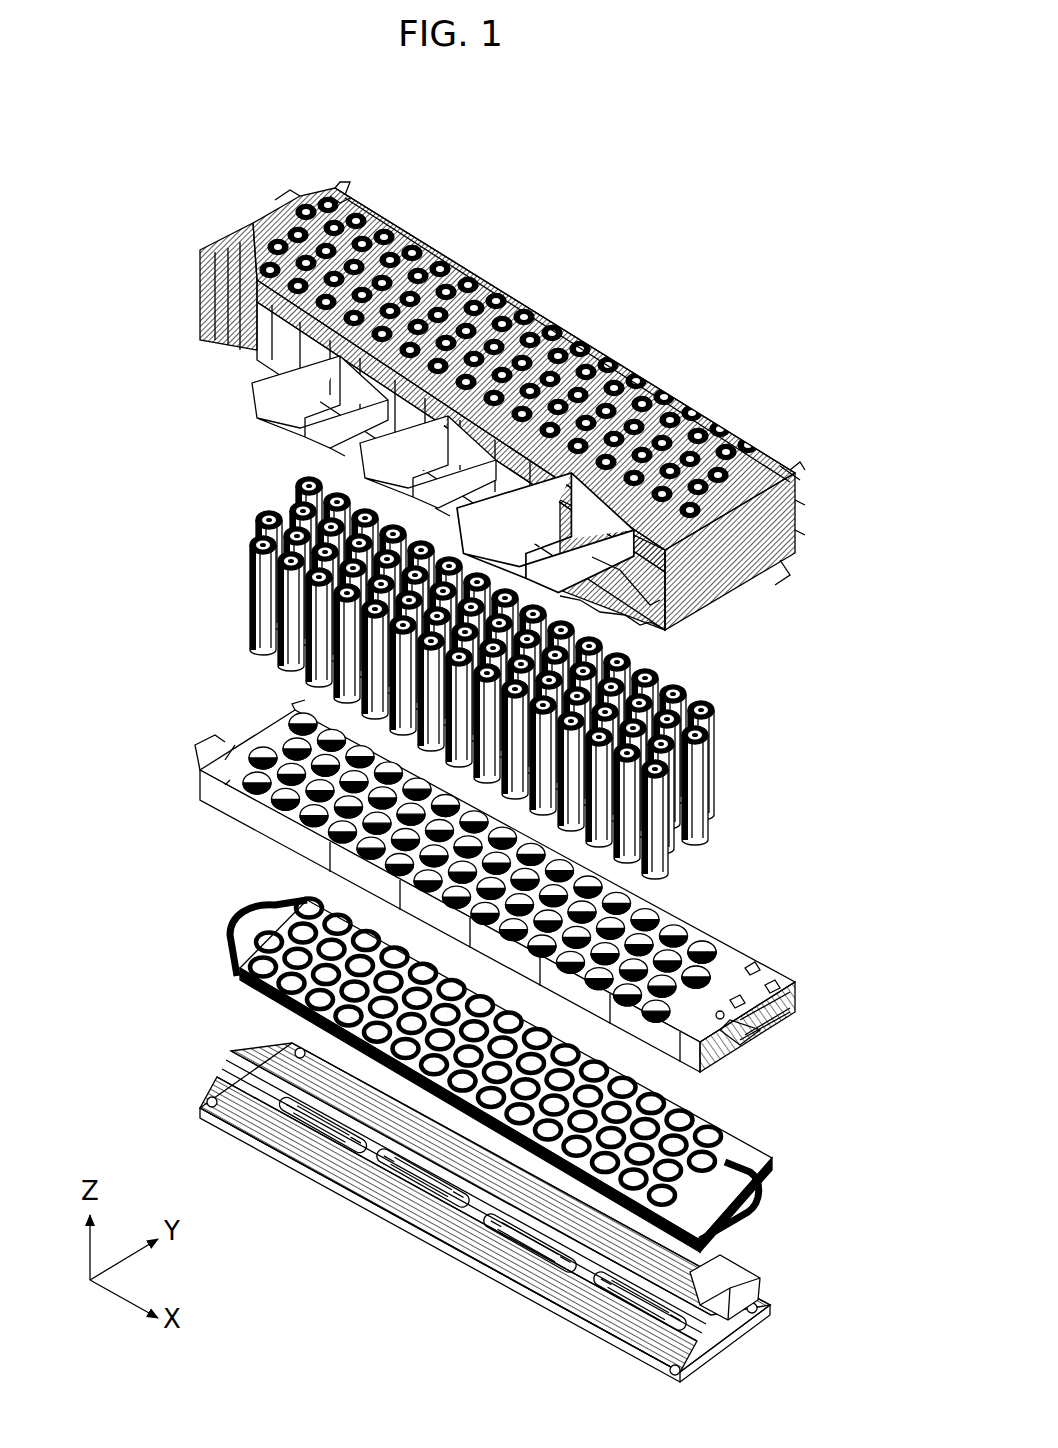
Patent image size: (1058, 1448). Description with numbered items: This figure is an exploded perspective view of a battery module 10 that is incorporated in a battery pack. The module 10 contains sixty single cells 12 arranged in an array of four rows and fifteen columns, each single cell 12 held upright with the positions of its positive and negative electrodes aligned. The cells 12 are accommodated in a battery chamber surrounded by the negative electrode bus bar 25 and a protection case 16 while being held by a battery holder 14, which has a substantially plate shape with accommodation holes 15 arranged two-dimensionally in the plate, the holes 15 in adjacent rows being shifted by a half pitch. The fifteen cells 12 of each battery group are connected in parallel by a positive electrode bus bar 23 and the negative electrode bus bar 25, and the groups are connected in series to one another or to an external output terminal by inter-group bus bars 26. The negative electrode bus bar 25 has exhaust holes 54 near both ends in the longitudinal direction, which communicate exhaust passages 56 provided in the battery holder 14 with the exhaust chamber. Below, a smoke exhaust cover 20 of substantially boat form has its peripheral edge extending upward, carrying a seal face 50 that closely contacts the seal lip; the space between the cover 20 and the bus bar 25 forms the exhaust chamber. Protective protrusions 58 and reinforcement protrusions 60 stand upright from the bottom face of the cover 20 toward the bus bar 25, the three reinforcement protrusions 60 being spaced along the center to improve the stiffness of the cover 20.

The battery module 10 is at (586, 243).
The single cell 12 is at (714, 712).
The battery holder 14 is at (196, 822).
The accommodation hole 15 is at (714, 952).
The protection case 16 is at (205, 353).
The smoke exhaust cover 20 is at (247, 1147).
The positive electrode bus bar 23 is at (650, 395).
The negative electrode bus bar 25 is at (236, 972).
The inter-group bus bar 26 is at (323, 437).
The seal face 50 is at (320, 1165).
The exhaust hole 54 is at (232, 916).
The exhaust passage 56 is at (762, 1030).
The protective protrusion 58 is at (707, 1262).
The reinforcement protrusion 60 is at (735, 1295).